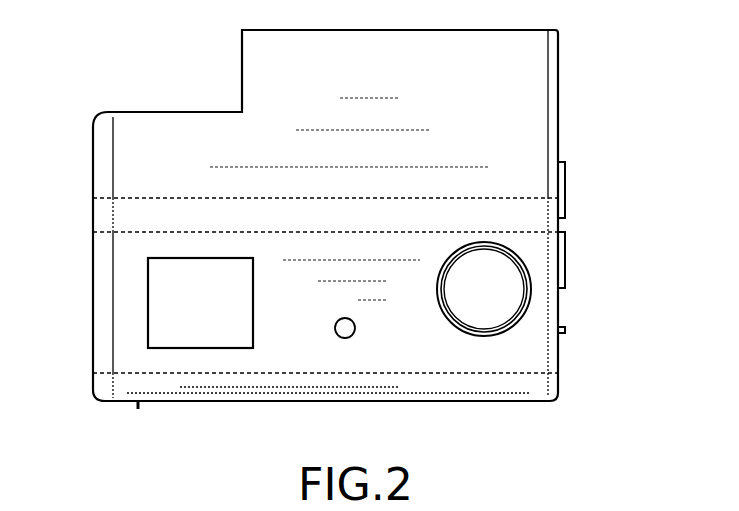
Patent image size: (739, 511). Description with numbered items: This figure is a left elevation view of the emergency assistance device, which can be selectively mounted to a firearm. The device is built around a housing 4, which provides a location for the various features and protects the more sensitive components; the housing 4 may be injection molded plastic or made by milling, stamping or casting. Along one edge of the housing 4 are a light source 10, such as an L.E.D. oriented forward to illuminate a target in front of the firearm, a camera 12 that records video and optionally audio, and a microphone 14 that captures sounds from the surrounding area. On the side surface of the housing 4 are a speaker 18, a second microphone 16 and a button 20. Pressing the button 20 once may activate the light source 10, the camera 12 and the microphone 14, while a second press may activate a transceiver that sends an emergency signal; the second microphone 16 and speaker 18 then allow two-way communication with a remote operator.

The housing 4 is at (535, 86).
The light source 10 is at (565, 173).
The camera 12 is at (565, 277).
The microphone 14 is at (565, 330).
The second microphone 16 is at (350, 334).
The speaker 18 is at (168, 336).
The button 20 is at (489, 320).